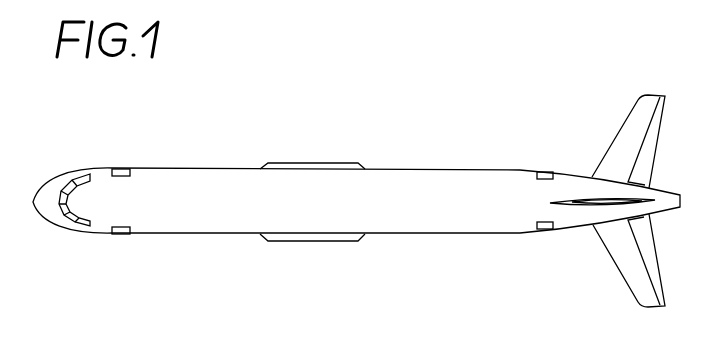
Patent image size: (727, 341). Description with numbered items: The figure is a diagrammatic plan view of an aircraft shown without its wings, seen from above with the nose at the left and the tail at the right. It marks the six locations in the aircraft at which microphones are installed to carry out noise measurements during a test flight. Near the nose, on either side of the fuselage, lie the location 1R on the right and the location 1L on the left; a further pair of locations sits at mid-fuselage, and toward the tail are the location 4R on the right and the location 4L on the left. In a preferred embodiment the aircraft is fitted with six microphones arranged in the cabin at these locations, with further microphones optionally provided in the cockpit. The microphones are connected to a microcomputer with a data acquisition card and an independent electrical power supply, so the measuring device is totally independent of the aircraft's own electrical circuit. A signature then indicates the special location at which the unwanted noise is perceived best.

The location 1R is at (120, 181).
The location 1L is at (120, 220).
The location 4R is at (543, 181).
The location 4L is at (543, 220).